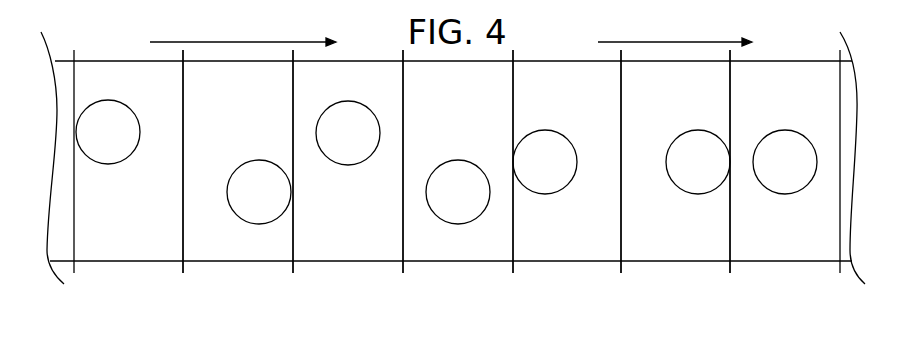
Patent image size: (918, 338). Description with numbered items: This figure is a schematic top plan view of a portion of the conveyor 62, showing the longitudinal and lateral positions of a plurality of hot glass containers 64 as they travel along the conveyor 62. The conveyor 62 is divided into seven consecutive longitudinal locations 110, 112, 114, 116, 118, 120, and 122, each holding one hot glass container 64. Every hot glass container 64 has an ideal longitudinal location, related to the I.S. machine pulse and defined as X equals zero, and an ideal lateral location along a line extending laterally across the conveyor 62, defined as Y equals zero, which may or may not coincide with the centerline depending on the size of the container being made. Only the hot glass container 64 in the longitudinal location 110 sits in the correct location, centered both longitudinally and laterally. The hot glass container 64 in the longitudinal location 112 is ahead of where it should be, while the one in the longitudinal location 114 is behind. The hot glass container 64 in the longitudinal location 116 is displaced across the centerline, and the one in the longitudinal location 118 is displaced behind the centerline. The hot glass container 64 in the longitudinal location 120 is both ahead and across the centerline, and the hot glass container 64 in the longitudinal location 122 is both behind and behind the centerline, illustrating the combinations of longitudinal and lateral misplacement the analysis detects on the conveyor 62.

The conveyor 62 is at (97, 262).
The hot glass container 64 is at (446, 162).
The longitudinal location 110 is at (785, 261).
The longitudinal location 112 is at (676, 261).
The longitudinal location 114 is at (567, 261).
The longitudinal location 116 is at (458, 261).
The longitudinal location 118 is at (348, 261).
The longitudinal location 120 is at (238, 261).
The longitudinal location 122 is at (128, 261).